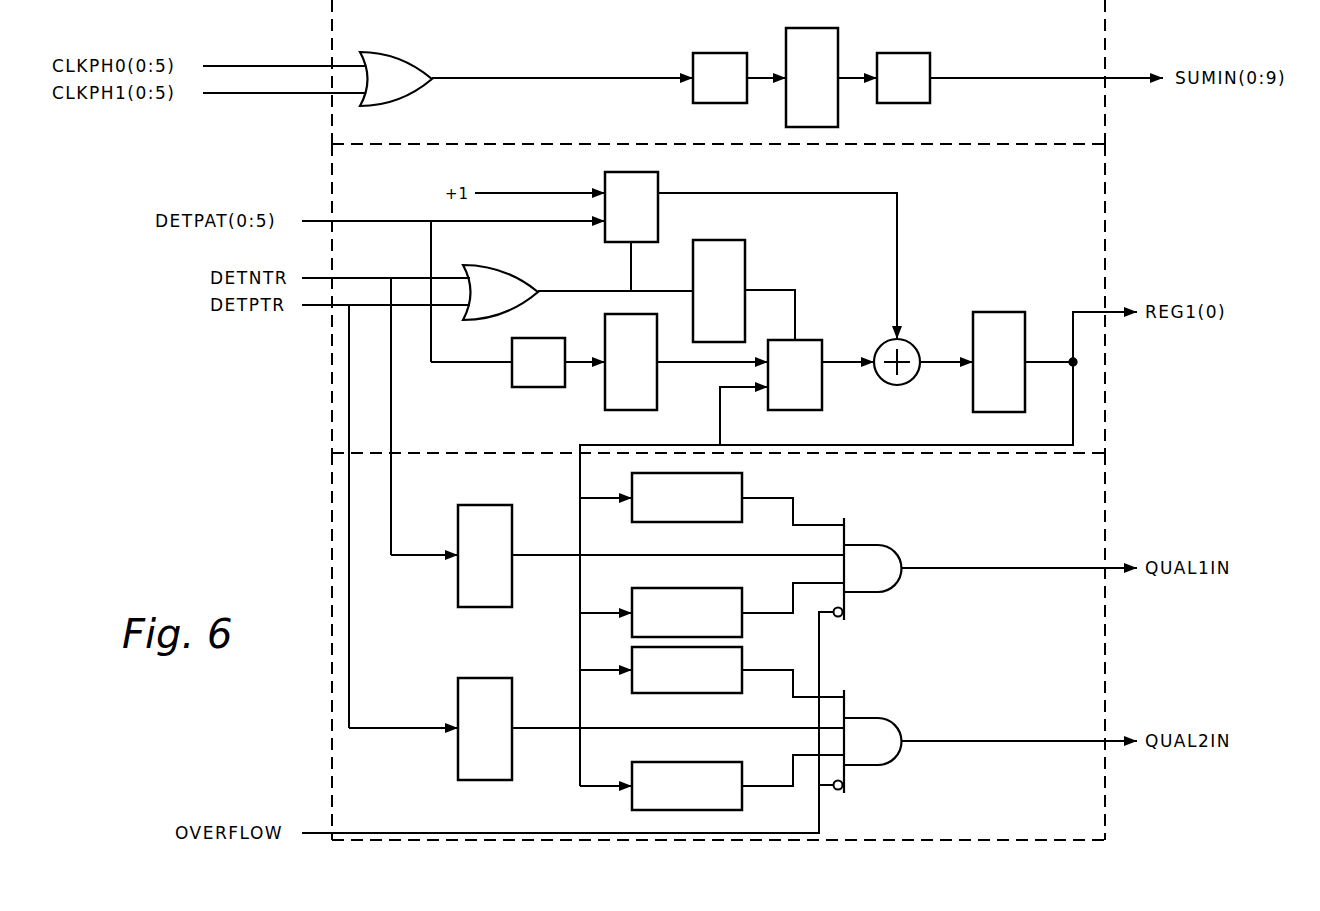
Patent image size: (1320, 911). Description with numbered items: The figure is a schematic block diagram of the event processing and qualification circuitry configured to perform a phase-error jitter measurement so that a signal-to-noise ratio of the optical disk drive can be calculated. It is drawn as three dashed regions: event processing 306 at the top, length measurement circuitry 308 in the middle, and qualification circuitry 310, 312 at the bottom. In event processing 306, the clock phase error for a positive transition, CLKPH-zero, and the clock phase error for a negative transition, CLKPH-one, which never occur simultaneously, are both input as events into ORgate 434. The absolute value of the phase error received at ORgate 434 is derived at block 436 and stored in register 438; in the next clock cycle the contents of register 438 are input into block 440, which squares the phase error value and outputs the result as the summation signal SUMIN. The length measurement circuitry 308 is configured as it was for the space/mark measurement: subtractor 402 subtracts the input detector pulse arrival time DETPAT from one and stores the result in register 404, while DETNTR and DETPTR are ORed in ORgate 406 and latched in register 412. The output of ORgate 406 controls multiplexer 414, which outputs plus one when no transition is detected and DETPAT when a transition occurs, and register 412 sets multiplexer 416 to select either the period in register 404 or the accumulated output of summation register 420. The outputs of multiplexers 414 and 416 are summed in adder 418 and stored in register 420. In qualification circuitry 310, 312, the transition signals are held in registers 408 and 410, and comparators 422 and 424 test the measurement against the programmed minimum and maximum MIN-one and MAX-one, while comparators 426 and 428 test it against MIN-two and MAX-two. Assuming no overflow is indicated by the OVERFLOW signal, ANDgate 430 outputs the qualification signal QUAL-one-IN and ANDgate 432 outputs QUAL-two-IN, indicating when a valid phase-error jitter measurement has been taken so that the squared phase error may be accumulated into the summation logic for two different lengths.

The event processing 306 is at (1105, 20).
The length measurement circuitry 308 is at (1105, 180).
The qualification circuitry 310 is at (1105, 654).
The qualification circuitry 312 is at (785, 646).
The subtractor 402 is at (544, 338).
The register 404 is at (605, 397).
The ORgate 406 is at (497, 265).
The register 408 is at (486, 505).
The register 410 is at (486, 678).
The register 412 is at (748, 258).
The multiplexer 414 is at (662, 186).
The multiplexer 416 is at (802, 340).
The adder 418 is at (905, 385).
The summation register 420 is at (1000, 313).
The comparator 422 is at (746, 492).
The comparator 424 is at (746, 618).
The comparator 426 is at (746, 690).
The comparator 428 is at (746, 795).
The ANDgate 430 is at (890, 548).
The ANDgate 432 is at (890, 721).
The ORgate 434 is at (384, 52).
The absolute value block 436 is at (722, 53).
The register 438 is at (840, 33).
The squaring block 440 is at (906, 53).